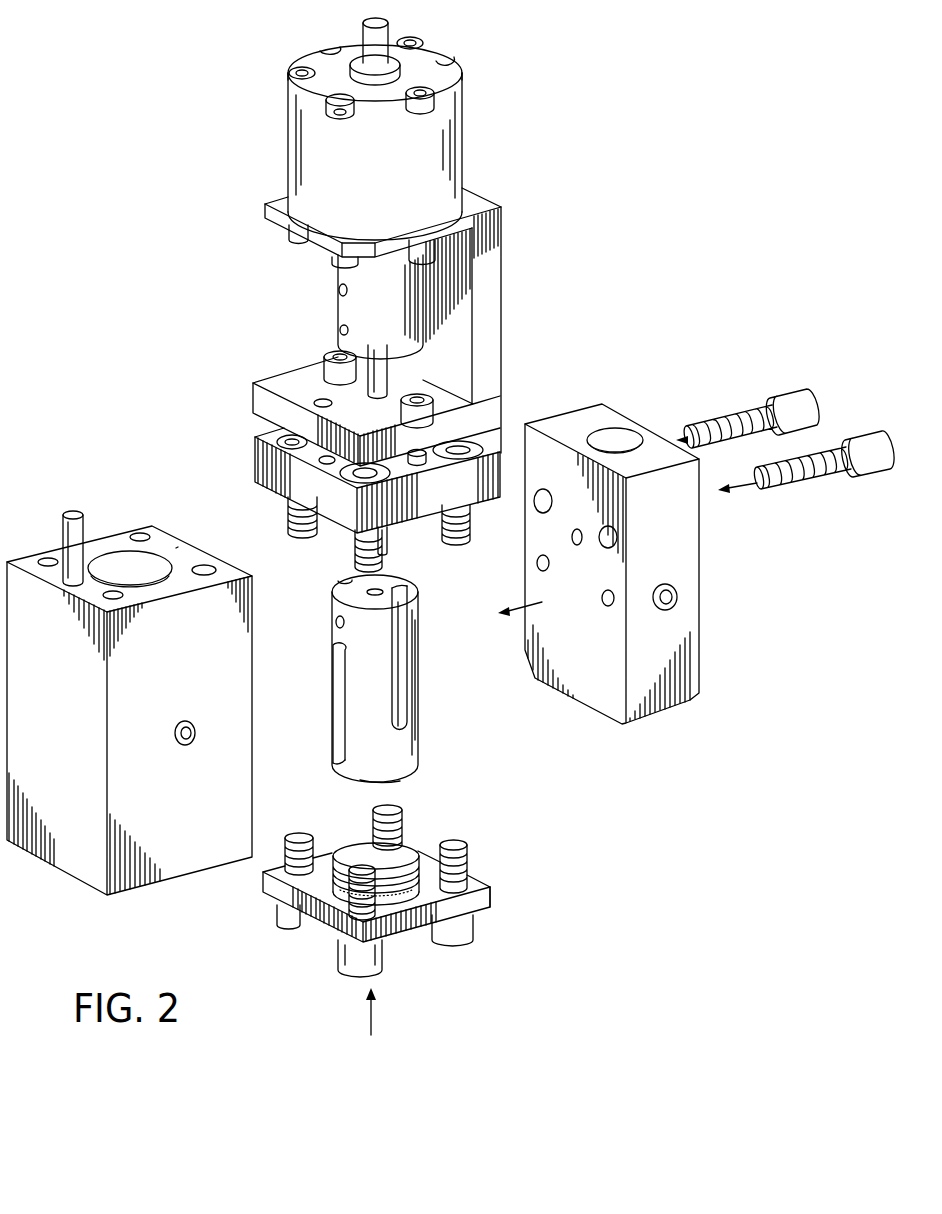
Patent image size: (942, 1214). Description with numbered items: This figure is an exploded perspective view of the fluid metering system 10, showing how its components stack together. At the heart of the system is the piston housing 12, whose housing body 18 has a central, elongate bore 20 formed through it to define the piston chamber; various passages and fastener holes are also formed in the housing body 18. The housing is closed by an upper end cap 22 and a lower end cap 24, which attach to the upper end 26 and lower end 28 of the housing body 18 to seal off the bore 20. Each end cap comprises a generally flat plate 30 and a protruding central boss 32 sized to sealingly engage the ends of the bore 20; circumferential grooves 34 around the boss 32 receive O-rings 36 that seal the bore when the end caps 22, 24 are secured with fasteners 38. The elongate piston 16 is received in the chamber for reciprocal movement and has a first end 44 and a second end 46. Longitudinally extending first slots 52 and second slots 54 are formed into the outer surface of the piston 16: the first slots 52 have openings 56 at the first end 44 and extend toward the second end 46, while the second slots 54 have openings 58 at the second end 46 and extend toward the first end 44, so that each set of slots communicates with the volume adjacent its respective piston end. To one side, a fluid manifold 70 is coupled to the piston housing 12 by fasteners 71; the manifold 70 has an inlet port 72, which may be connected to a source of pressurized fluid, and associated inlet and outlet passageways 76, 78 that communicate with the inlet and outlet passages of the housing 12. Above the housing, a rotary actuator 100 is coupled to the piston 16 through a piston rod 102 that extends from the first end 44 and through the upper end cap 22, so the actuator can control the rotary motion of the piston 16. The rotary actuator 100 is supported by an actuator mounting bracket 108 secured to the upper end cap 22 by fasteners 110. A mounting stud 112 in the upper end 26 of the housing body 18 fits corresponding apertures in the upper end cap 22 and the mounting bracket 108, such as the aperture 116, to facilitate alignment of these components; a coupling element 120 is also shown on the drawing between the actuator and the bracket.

The fluid metering system 10 is at (716, 188).
The piston housing 12 is at (112, 522).
The piston 16 is at (428, 733).
The housing body 18 is at (288, 676).
The bore 20 is at (147, 565).
The upper end cap 22 is at (246, 455).
The lower end cap 24 is at (255, 897).
The upper end 26 is at (177, 546).
The lower end 28 is at (90, 889).
The plate 30 is at (490, 895).
The central boss 32 is at (357, 850).
The circumferential grooves 34 is at (425, 863).
The O-rings 36 is at (376, 892).
The fasteners 38 is at (290, 520).
The first end 44 is at (345, 588).
The second end 46 is at (400, 776).
The first slots 52 is at (400, 672).
The second slots 54 is at (340, 710).
The openings 56 is at (395, 585).
The openings 58 is at (338, 768).
The fluid manifold 70 is at (700, 570).
The fasteners 71 is at (860, 428).
The inlet port 72 is at (620, 437).
The inlet passageway 76 is at (572, 537).
The outlet passageway 78 is at (608, 600).
The rotary actuator 100 is at (470, 117).
The piston rod 102 is at (388, 383).
The actuator mounting bracket 108 is at (500, 318).
The fasteners 110 is at (323, 350).
The mounting stud 112 is at (63, 537).
The aperture 116 is at (318, 399).
The coupling sleeve 120 is at (326, 299).